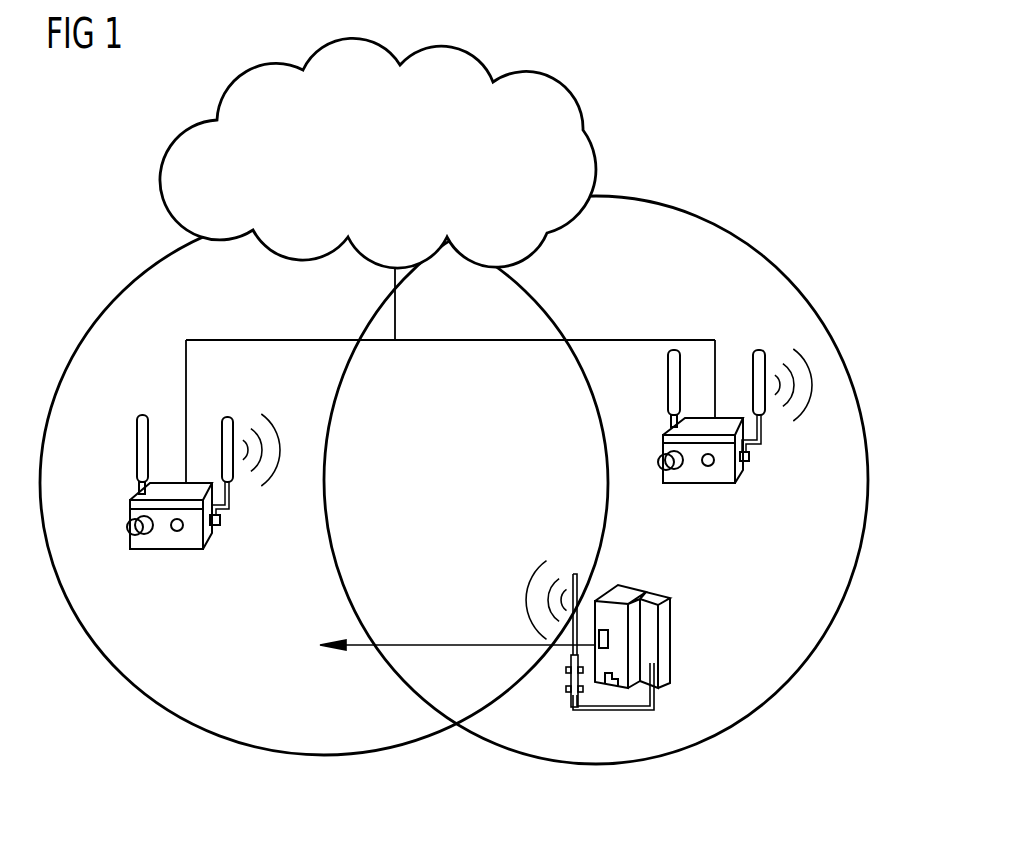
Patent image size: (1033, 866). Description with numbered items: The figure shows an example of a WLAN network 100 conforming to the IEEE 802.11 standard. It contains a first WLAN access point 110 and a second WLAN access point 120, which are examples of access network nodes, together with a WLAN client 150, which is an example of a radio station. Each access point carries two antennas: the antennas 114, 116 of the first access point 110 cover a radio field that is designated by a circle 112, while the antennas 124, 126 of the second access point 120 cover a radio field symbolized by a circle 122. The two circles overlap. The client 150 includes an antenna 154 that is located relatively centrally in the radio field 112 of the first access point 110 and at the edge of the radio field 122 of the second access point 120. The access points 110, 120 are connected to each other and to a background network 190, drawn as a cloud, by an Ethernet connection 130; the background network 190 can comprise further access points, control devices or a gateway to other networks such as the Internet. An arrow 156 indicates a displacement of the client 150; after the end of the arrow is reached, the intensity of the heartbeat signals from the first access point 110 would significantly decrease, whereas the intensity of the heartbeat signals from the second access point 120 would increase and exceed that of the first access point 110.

The WLAN network 100 is at (737, 136).
The first WLAN access point 110 is at (698, 483).
The circle designating radio field of first access point 112 is at (600, 765).
The antenna of first access point 114 is at (668, 382).
The antenna of first access point 116 is at (757, 350).
The second WLAN access point 120 is at (167, 551).
The circle symbolizing radio field of second access point 122 is at (318, 756).
The antenna of second access point 124 is at (137, 450).
The antenna of second access point 126 is at (237, 423).
The Ethernet connection 130 is at (270, 338).
The WLAN client 150 is at (673, 638).
The antenna of the client 154 is at (572, 580).
The arrow indicating displacement of the client 156 is at (462, 643).
The background network 190 is at (177, 143).